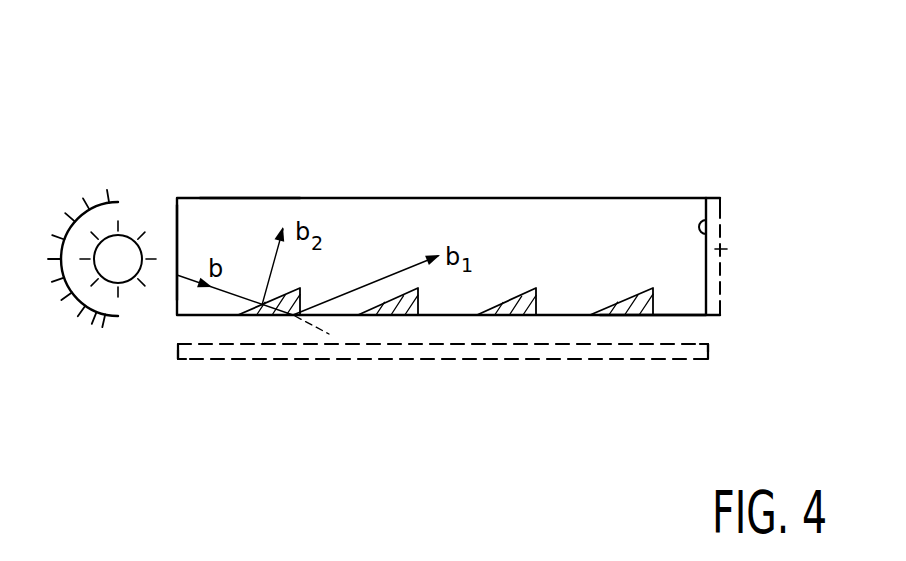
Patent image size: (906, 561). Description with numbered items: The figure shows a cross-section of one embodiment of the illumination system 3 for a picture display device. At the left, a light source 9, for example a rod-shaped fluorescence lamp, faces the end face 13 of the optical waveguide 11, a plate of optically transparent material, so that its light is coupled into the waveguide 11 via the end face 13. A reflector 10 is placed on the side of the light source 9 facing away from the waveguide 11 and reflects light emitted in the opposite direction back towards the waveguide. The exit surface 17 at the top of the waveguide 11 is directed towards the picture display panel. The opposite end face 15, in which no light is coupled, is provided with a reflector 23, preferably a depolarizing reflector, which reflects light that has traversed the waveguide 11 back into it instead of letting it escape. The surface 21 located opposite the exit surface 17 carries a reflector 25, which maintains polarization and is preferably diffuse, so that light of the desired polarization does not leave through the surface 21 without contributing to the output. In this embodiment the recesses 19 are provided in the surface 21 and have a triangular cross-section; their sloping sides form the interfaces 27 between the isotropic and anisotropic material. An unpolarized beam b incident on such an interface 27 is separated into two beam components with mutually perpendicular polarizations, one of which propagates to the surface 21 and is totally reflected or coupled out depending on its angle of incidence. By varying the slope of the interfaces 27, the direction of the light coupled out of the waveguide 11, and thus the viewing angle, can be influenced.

The illumination system 3 is at (640, 68).
The light source 9 is at (127, 270).
The reflector 10 is at (97, 316).
The optical waveguide 11 is at (642, 210).
The end face 13 is at (177, 222).
The end face 15 is at (707, 222).
The exit surface 17 is at (240, 198).
The recesses 19 is at (537, 293).
The surface 21 is at (700, 317).
The reflector 23 is at (742, 255).
The reflector 25 is at (282, 352).
The interfaces 27 is at (287, 292).